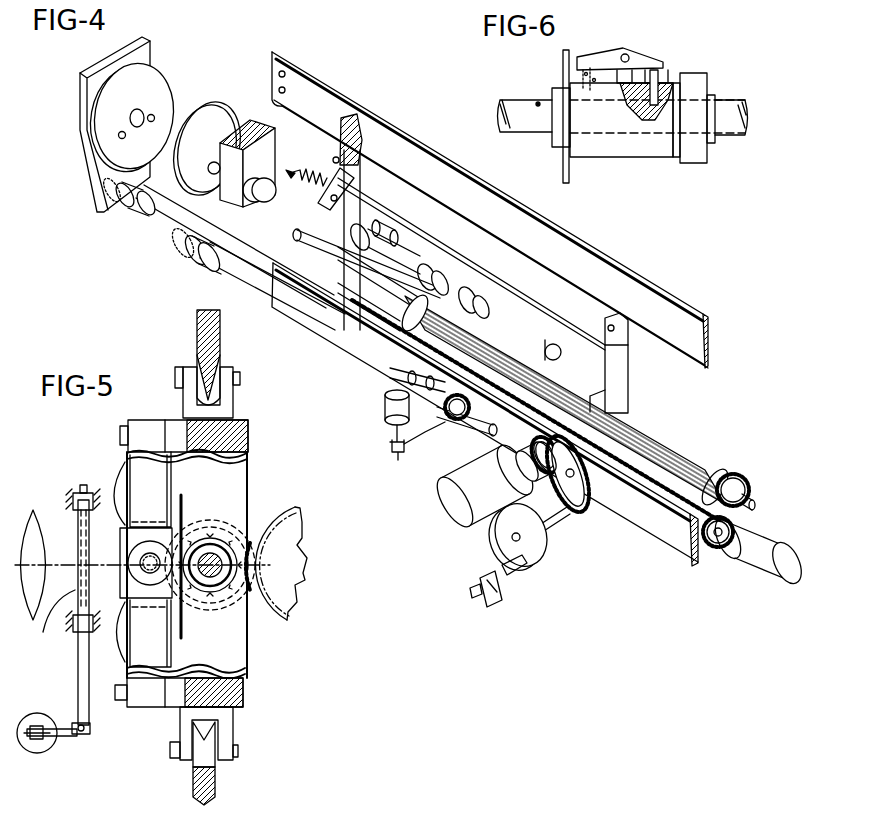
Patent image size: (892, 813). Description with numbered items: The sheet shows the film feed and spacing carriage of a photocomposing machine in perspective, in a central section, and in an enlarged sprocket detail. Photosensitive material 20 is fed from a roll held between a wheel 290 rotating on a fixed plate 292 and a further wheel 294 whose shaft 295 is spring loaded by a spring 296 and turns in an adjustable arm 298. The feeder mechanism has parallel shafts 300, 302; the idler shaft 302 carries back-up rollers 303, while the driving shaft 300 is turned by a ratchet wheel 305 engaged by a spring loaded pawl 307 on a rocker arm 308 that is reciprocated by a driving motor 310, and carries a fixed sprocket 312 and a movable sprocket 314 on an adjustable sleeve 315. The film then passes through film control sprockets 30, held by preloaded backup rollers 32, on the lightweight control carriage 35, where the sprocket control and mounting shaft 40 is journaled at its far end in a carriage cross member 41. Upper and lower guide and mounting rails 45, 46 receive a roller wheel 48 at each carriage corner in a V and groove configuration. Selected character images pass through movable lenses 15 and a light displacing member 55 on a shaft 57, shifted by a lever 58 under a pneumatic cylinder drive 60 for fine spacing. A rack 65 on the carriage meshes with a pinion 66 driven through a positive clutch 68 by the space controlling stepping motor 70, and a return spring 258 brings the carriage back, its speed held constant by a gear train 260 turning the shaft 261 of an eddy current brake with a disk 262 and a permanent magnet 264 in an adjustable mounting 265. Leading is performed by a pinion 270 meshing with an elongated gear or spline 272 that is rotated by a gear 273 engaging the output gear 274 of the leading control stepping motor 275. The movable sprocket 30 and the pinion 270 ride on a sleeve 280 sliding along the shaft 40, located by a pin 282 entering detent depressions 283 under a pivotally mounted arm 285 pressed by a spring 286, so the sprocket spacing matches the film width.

In FIG. 5, the movable lenses 15 is at (29, 512).
In FIG. 5, the photosensitive material 20 is at (184, 626).
In FIG. 4, the film control sprockets 30 is at (426, 234).
In FIG. 5, the film control sprockets 30 is at (226, 592).
In FIG. 5, the backup rollers 32 is at (150, 588).
In FIG. 4, the control carriage 35 is at (534, 279).
In FIG. 5, the control carriage 35 is at (260, 442).
In FIG. 4, the sprocket control and mounting shaft 40 is at (408, 240).
In FIG. 4, the carriage cross member 41 is at (562, 300).
In FIG. 4, the upper guide and mounting rail 45 is at (650, 296).
In FIG. 5, the upper guide and mounting rail 45 is at (220, 345).
In FIG. 4, the lower guide and mounting rail 46 is at (300, 326).
In FIG. 5, the lower guide and mounting rail 46 is at (193, 790).
In FIG. 4, the roller wheel 48 is at (340, 120).
In FIG. 5, the roller wheel 48 is at (195, 358).
In FIG. 5, the light displacing member 55 is at (47, 621).
In FIG. 5, the shaft 57 is at (78, 672).
In FIG. 5, the lever 58 is at (65, 735).
In FIG. 5, the pneumatic cylinder drive 60 is at (37, 748).
In FIG. 4, the rack 65 is at (362, 308).
In FIG. 4, the pinion 66 is at (588, 462).
In FIG. 4, the positive clutch 68 is at (522, 470).
In FIG. 4, the space controlling stepping motor 70 is at (450, 514).
In FIG. 4, the return spring 258 is at (299, 172).
In FIG. 4, the gear train 260 is at (595, 503).
In FIG. 4, the shaft 261 is at (549, 524).
In FIG. 4, the disk 262 is at (498, 540).
In FIG. 4, the permanent magnet 264 is at (516, 574).
In FIG. 4, the adjustable mounting 265 is at (486, 600).
In FIG. 4, the pinion 270 is at (480, 250).
In FIG. 5, the pinion 270 is at (218, 525).
In FIG. 6, the pinion 270 is at (563, 163).
In FIG. 4, the elongated gear or spline 272 is at (685, 450).
In FIG. 5, the elongated gear or spline 272 is at (300, 590).
In FIG. 4, the gear 273 is at (738, 473).
In FIG. 4, the output gear 274 is at (720, 548).
In FIG. 4, the leading control stepping motor 275 is at (764, 572).
In FIG. 6, the sleeve 280 is at (635, 143).
In FIG. 6, the pin 282 is at (660, 75).
In FIG. 6, the detent depressions 283 is at (538, 102).
In FIG. 6, the pivotally mounted arm 285 is at (610, 63).
In FIG. 6, the spring 286 is at (580, 72).
In FIG. 4, the wheel 290 is at (155, 82).
In FIG. 4, the fixed plate 292 is at (79, 83).
In FIG. 4, the wheel 294 is at (200, 165).
In FIG. 4, the shaft 295 is at (262, 203).
In FIG. 4, the spring 296 is at (213, 163).
In FIG. 4, the adjustable arm 298 is at (258, 128).
In FIG. 4, the shaft 300 is at (140, 212).
In FIG. 4, the idler shaft 302 is at (262, 262).
In FIG. 4, the back-up rollers 303 is at (124, 198).
In FIG. 4, the ratchet wheel 305 is at (452, 420).
In FIG. 4, the spring loaded pawl 307 is at (440, 440).
In FIG. 4, the rocker arm 308 is at (392, 446).
In FIG. 4, the driving motor 310 is at (373, 417).
In FIG. 4, the fixed sprocket 312 is at (106, 200).
In FIG. 4, the movable sprocket 314 is at (180, 258).
In FIG. 4, the sleeve 315 is at (203, 266).